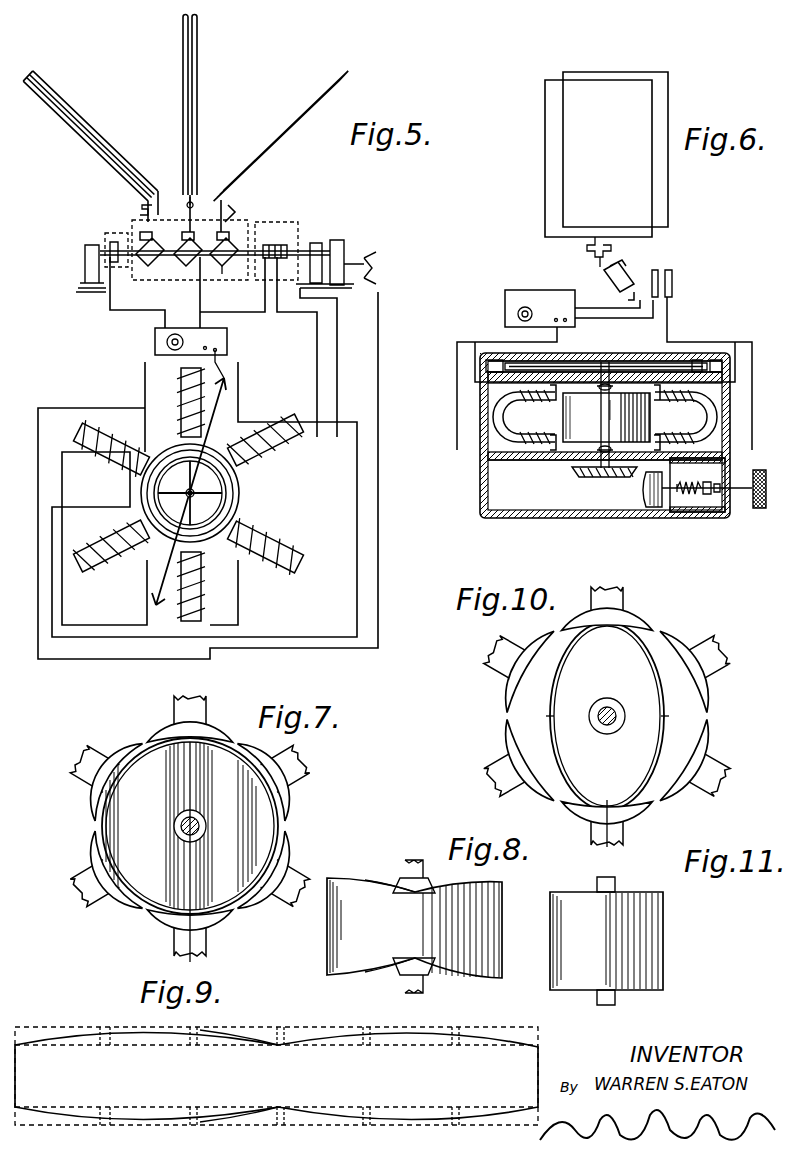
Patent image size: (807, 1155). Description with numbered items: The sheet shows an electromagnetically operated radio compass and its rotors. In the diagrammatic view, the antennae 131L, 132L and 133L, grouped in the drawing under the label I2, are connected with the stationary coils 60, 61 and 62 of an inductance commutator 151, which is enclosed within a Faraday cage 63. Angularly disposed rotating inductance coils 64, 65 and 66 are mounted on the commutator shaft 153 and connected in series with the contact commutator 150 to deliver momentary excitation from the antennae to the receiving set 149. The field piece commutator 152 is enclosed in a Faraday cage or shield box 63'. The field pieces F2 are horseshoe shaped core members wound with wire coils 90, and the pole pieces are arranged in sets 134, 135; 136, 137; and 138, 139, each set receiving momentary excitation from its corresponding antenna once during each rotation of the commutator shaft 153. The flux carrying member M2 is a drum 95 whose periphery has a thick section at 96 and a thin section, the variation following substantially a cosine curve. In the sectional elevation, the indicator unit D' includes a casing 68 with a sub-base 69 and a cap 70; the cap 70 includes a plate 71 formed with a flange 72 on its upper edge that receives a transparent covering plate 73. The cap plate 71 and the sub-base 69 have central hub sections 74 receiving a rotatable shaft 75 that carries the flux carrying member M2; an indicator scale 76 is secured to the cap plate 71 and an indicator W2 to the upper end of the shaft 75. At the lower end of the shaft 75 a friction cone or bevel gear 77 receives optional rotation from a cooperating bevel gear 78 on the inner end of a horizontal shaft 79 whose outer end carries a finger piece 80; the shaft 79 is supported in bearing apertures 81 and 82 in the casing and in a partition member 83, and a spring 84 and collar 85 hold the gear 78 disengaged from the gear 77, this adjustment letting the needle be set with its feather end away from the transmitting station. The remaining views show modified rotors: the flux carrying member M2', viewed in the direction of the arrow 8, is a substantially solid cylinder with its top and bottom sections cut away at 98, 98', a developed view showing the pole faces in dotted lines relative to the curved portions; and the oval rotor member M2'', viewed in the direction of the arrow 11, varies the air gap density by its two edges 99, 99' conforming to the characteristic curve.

In FIG. 5, the antenna 131L is at (82, 108).
In FIG. 5, the antenna 132L is at (200, 62).
In FIG. 5, the antenna 133L is at (332, 78).
In FIG. 5, the indicator I2 is at (245, 95).
In FIG. 5, the stationary coil 60 is at (160, 262).
In FIG. 5, the stationary coil 61 is at (200, 262).
In FIG. 5, the stationary coil 62 is at (236, 262).
In FIG. 5, the Faraday cage 63 is at (204, 237).
In FIG. 5, the Faraday cage or shield box 63' is at (286, 237).
In FIG. 5, the rotating inductance coil 64 is at (152, 238).
In FIG. 5, the rotating inductance coil 65 is at (192, 238).
In FIG. 5, the rotating inductance coil 66 is at (219, 267).
In FIG. 5, the contact commutator 150 is at (110, 242).
In FIG. 5, the inductance commutator 151 is at (142, 278).
In FIG. 5, the field piece commutator 152 is at (290, 245).
In FIG. 6, the field piece commutator 152 is at (680, 264).
In FIG. 5, the commutator shaft 153 is at (305, 248).
In FIG. 5, the receiving set 149 is at (155, 343).
In FIG. 6, the receiving set 149 is at (505, 306).
In FIG. 5, the field pole piece 134 is at (82, 428).
In FIG. 5, the field pole piece 135 is at (296, 560).
In FIG. 5, the field pole piece 136 is at (186, 375).
In FIG. 5, the field pole piece 137 is at (186, 615).
In FIG. 5, the field pole piece 138 is at (294, 440).
In FIG. 5, the field pole piece 139 is at (84, 562).
In FIG. 5, the wire coil 90 is at (178, 400).
In FIG. 5, the drum 95 is at (136, 495).
In FIG. 5, the thick section 96 is at (176, 525).
In FIG. 5, the flux carrying member M2 is at (159, 491).
In FIG. 6, the flux carrying member M2 is at (594, 417).
In FIG. 5, the field pieces F2 is at (189, 495).
In FIG. 6, the field pieces F2 is at (492, 418).
In FIG. 5, the indicator unit D' is at (208, 458).
In FIG. 6, the indicator unit D' is at (565, 435).
In FIG. 6, the indicator W2 is at (570, 362).
In FIG. 6, the casing 68 is at (470, 462).
In FIG. 6, the sub-base 69 is at (545, 462).
In FIG. 6, the cap 70 is at (730, 355).
In FIG. 6, the cap plate 71 is at (716, 372).
In FIG. 6, the flange 72 is at (716, 358).
In FIG. 6, the transparent covering plate 73 is at (694, 358).
In FIG. 6, the central hub section 74 is at (613, 388).
In FIG. 6, the rotatable shaft 75 is at (598, 388).
In FIG. 6, the indicator scale 76 is at (490, 364).
In FIG. 6, the friction cone or bevel gear 77 is at (602, 478).
In FIG. 6, the cone or bevel gear 78 is at (644, 497).
In FIG. 6, the horizontal shaft 79 is at (740, 486).
In FIG. 6, the finger piece 80 is at (760, 510).
In FIG. 6, the bearing aperture 81 is at (689, 480).
In FIG. 6, the bearing aperture 82 is at (711, 497).
In FIG. 6, the partition member 83 is at (697, 503).
In FIG. 6, the spring 84 is at (710, 480).
In FIG. 6, the collar 85 is at (687, 497).
In FIG. 7, the rotor or flux carrying member M2' is at (199, 826).
In FIG. 8, the rotor or flux carrying member M2' is at (396, 926).
In FIG. 9, the rotor or flux carrying member M2' is at (276, 1060).
In FIG. 10, the rotor member M2'' is at (607, 716).
In FIG. 11, the rotor member M2'' is at (630, 941).
In FIG. 7, the arrow 8 is at (197, 857).
In FIG. 10, the arrow 11 is at (617, 831).
In FIG. 10, the edge 99 is at (675, 717).
In FIG. 10, the edge 99' is at (537, 717).
In FIG. 8, the cut-away section 98 is at (387, 875).
In FIG. 9, the cut-away section 98 is at (269, 1026).
In FIG. 8, the cut-away section 98' is at (390, 978).
In FIG. 9, the cut-away section 98' is at (274, 1126).